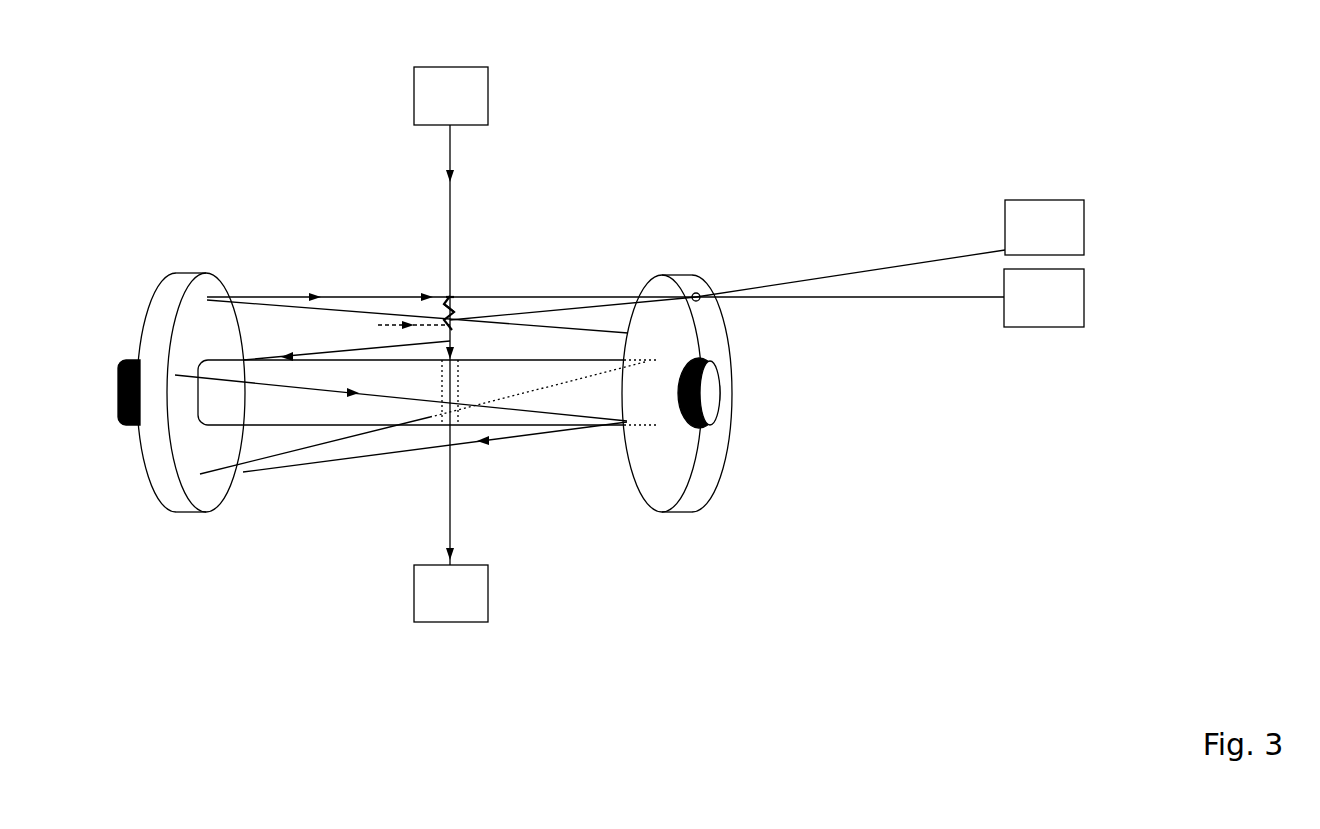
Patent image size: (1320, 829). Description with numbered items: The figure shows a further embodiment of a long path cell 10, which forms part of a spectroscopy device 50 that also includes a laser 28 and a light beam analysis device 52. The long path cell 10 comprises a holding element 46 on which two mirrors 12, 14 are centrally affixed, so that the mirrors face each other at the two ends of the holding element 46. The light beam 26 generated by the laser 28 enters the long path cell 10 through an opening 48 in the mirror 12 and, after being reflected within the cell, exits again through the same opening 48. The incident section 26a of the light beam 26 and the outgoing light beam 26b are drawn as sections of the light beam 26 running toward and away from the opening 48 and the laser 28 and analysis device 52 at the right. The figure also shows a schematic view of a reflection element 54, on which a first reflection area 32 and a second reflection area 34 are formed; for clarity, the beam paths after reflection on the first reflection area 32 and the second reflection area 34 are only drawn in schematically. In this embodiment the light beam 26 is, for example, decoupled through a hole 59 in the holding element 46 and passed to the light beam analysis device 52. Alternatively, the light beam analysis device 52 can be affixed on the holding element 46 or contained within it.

The long path cell 10 is at (968, 112).
The mirror 12 is at (661, 276).
The mirror 14 is at (176, 278).
The light beam 26 is at (460, 345).
The incident section of the light beam 26a is at (842, 275).
The outgoing light beam 26b is at (838, 298).
The laser 28 is at (749, 161).
The first reflection area 32 is at (424, 305).
The second reflection area 34 is at (474, 313).
The holding element 46 is at (708, 393).
The opening 48 is at (697, 291).
The spectroscopy device 50 is at (344, 126).
The light beam analysis device 52 is at (749, 445).
The reflection element 54 is at (452, 296).
The hole 59 is at (445, 419).